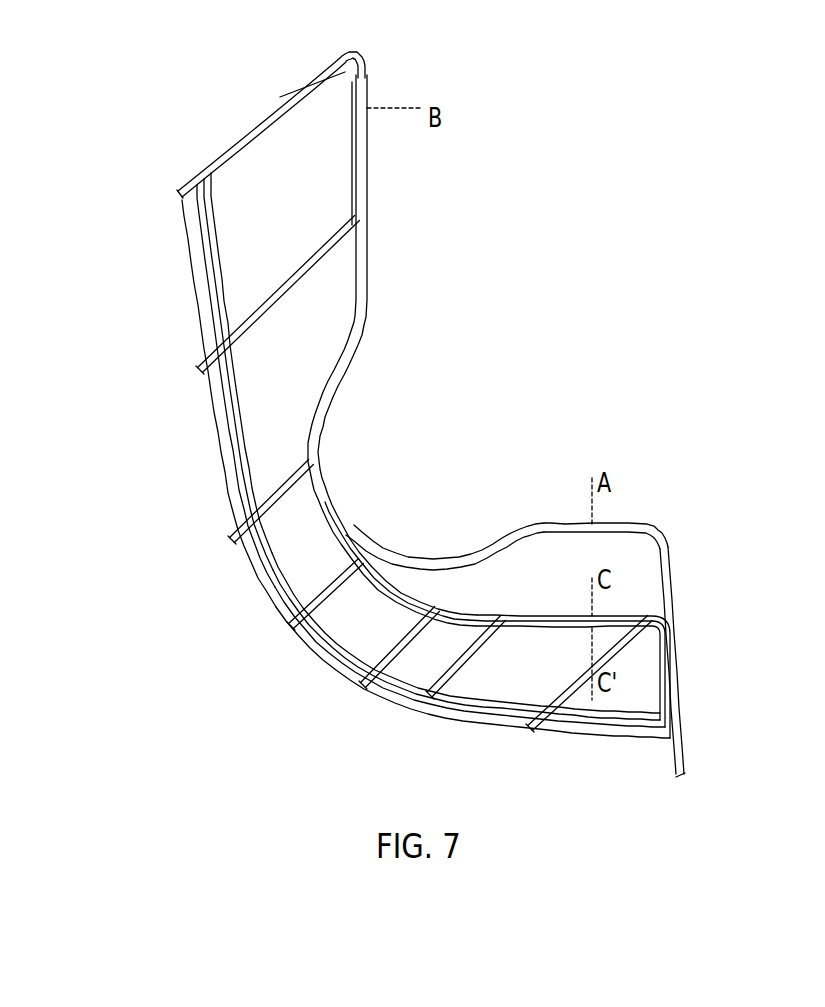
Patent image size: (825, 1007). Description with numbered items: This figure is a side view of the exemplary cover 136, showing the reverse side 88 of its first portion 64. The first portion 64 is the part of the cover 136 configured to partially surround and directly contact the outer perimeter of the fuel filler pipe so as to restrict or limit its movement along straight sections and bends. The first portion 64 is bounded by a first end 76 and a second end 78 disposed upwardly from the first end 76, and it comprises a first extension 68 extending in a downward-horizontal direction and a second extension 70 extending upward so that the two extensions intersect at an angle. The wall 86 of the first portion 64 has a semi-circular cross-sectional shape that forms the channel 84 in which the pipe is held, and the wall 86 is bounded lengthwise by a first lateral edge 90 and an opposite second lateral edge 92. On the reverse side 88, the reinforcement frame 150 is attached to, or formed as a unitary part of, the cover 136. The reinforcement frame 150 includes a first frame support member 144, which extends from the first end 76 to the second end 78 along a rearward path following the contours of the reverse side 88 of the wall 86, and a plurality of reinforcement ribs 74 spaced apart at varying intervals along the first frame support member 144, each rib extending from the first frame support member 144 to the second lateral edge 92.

The cover 136 is at (662, 101).
The first portion 64 is at (367, 183).
The first extension 68 is at (632, 688).
The second extension 70 is at (367, 258).
The reinforcement ribs 74 is at (177, 197).
The first end 76 is at (680, 696).
The second end 78 is at (237, 141).
The channel 84 is at (650, 572).
The wall 86 is at (505, 598).
The reverse side 88 is at (305, 107).
The first lateral edge 90 is at (553, 523).
The second lateral edge 92 is at (552, 615).
The first frame support member 144 is at (224, 503).
The reinforcement frame 150 is at (214, 326).